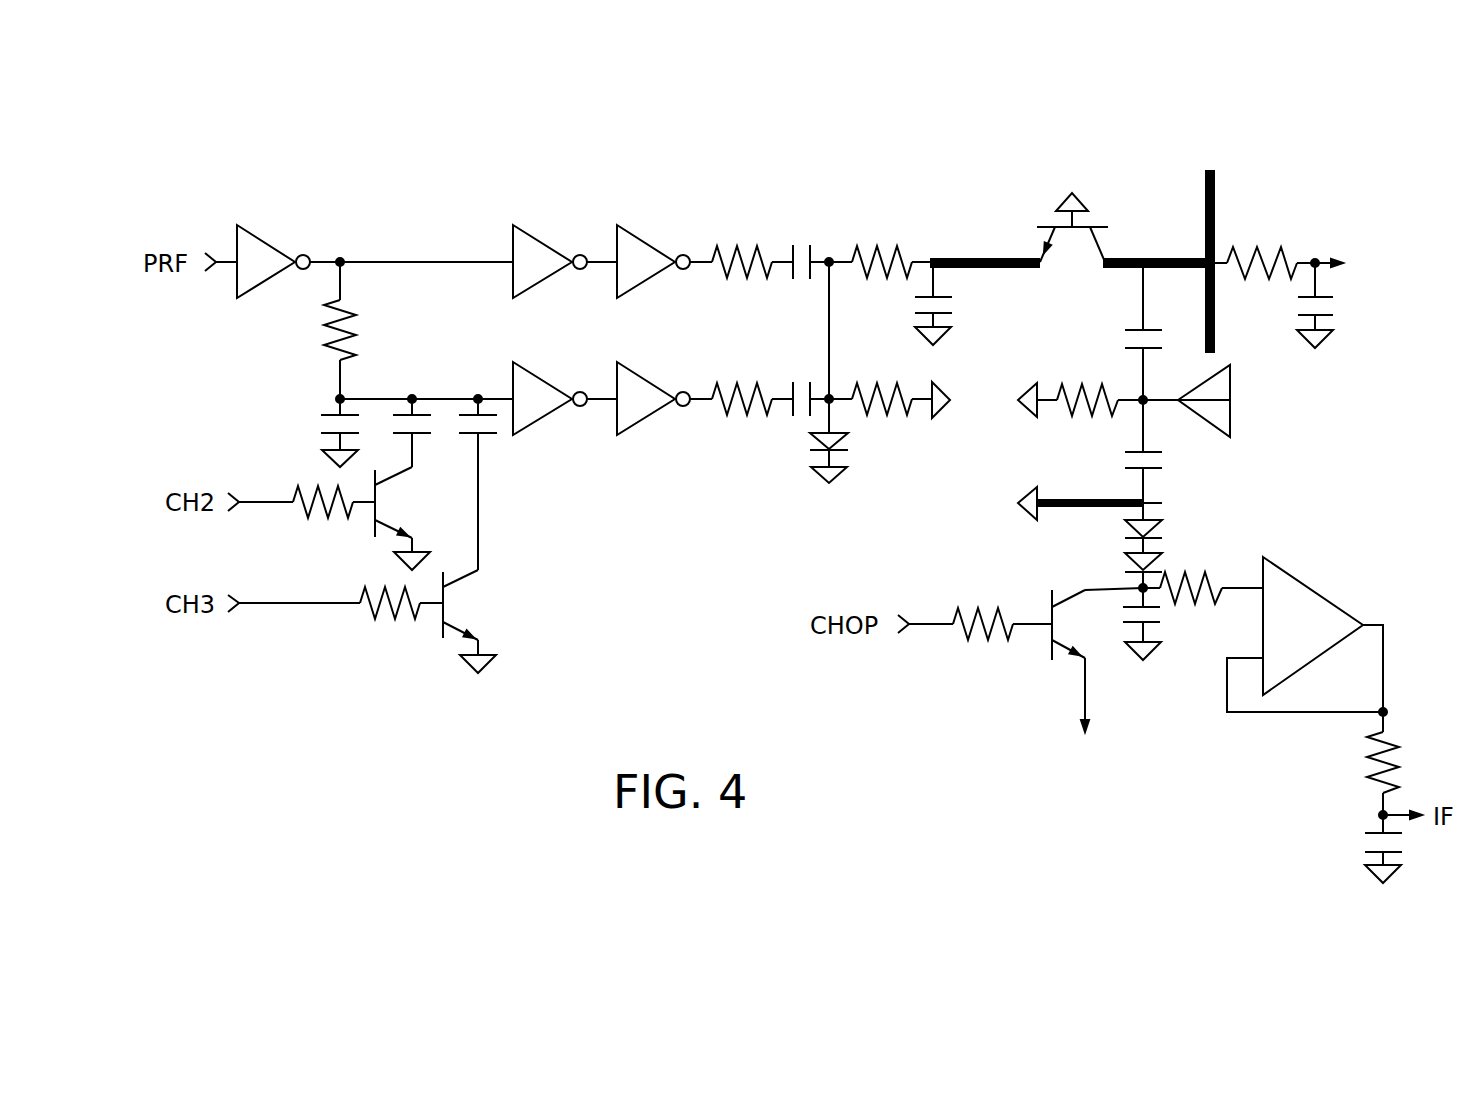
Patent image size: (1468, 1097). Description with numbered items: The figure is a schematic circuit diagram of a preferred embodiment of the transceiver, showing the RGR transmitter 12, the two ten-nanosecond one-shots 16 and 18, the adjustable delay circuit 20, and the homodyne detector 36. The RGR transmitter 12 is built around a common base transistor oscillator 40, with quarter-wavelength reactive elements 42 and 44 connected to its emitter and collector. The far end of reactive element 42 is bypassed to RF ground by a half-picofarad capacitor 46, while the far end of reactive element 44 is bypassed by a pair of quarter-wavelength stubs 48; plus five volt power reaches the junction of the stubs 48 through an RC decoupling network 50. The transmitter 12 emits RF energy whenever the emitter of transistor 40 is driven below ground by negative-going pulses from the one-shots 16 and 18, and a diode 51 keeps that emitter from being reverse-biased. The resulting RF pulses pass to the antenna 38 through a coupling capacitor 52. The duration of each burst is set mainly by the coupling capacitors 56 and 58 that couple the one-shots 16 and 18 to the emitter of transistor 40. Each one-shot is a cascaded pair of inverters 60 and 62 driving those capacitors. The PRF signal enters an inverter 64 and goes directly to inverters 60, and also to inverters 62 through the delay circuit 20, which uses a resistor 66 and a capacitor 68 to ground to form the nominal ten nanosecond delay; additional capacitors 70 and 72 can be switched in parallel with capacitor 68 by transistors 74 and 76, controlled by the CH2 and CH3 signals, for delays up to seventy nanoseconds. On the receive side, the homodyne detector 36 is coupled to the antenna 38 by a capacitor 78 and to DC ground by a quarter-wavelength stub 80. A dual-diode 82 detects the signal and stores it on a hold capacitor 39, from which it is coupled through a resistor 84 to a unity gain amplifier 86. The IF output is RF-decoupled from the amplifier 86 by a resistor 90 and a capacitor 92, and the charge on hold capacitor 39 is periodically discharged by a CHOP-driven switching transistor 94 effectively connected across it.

The RGR transmitter 12 is at (965, 185).
The one-shot 16 is at (660, 212).
The one-shot 18 is at (673, 455).
The adjustable delay circuit 20 is at (363, 663).
The homodyne detector 36 is at (1027, 665).
The antenna 38 is at (1218, 410).
The hold capacitor 39 is at (1158, 625).
The common base transistor oscillator 40 is at (1065, 230).
The quarter-wavelength reactive element 42 is at (1000, 268).
The quarter-wavelength reactive element 44 is at (1130, 258).
The capacitor 46 is at (920, 316).
The quarter-wavelength stubs 48 is at (1215, 227).
The RC decoupling network 50 is at (1315, 240).
The diode 51 is at (840, 440).
The coupling capacitor 52 is at (1125, 330).
The coupling capacitor 56 is at (790, 277).
The coupling capacitor 58 is at (792, 388).
The inverters 60 is at (633, 275).
The inverters 62 is at (633, 380).
The inverter 64 is at (268, 245).
The resistor 66 is at (362, 318).
The capacitor 68 is at (335, 417).
The capacitor 70 is at (422, 440).
The capacitor 72 is at (490, 440).
The transistor 74 is at (380, 493).
The transistor 76 is at (447, 593).
The capacitor 78 is at (1150, 470).
The quarter-wavelength stub 80 is at (1090, 507).
The dual-diode 82 is at (1173, 527).
The resistor 84 is at (1205, 575).
The unity gain amplifier 86 is at (1323, 602).
The resistor 90 is at (1398, 747).
The capacitor 92 is at (1365, 848).
The switching transistor 94 is at (1050, 612).